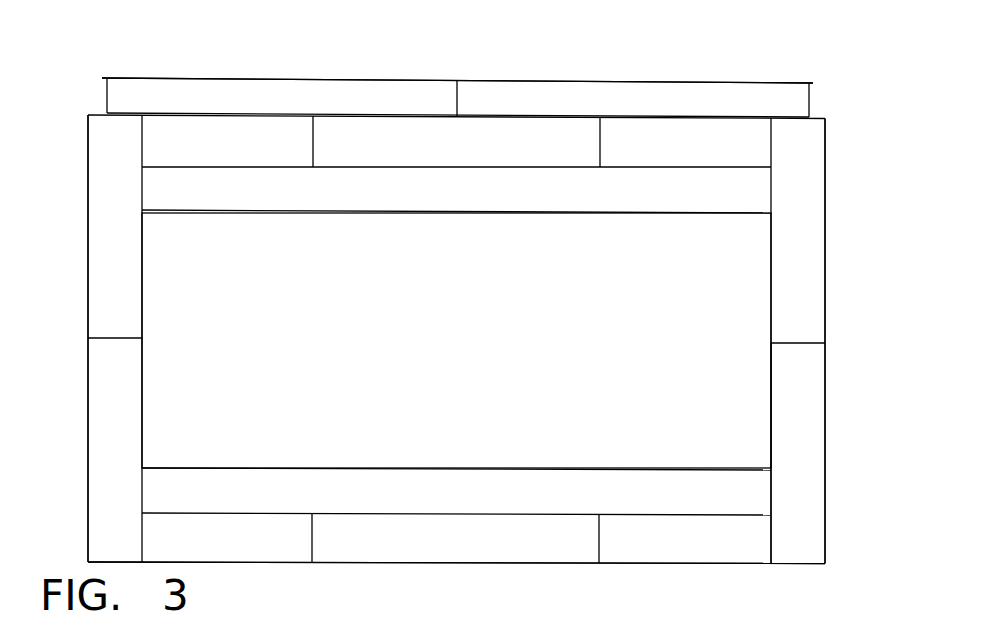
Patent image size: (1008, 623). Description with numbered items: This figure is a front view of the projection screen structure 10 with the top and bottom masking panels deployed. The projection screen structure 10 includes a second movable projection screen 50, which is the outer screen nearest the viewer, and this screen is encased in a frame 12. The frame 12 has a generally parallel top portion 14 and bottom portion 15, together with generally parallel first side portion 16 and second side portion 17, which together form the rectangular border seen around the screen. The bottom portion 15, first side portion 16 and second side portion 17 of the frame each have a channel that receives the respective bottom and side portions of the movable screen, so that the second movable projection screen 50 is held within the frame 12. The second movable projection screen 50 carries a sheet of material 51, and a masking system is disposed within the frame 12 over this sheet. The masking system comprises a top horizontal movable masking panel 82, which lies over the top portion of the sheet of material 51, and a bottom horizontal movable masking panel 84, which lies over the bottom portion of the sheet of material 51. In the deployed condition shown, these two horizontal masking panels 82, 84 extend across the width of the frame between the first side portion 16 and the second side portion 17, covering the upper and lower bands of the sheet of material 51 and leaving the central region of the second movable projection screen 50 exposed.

The projection screen structure 10 is at (732, 46).
The frame 12 is at (770, 77).
The top portion 14 is at (477, 80).
The bottom portion 15 is at (423, 565).
The first side portion 16 is at (89, 262).
The second side portion 17 is at (826, 256).
The second movable projection screen 50 is at (243, 352).
The sheet of material 51 is at (708, 443).
The top horizontal movable masking panel 82 is at (288, 192).
The bottom horizontal movable masking panel 84 is at (268, 497).